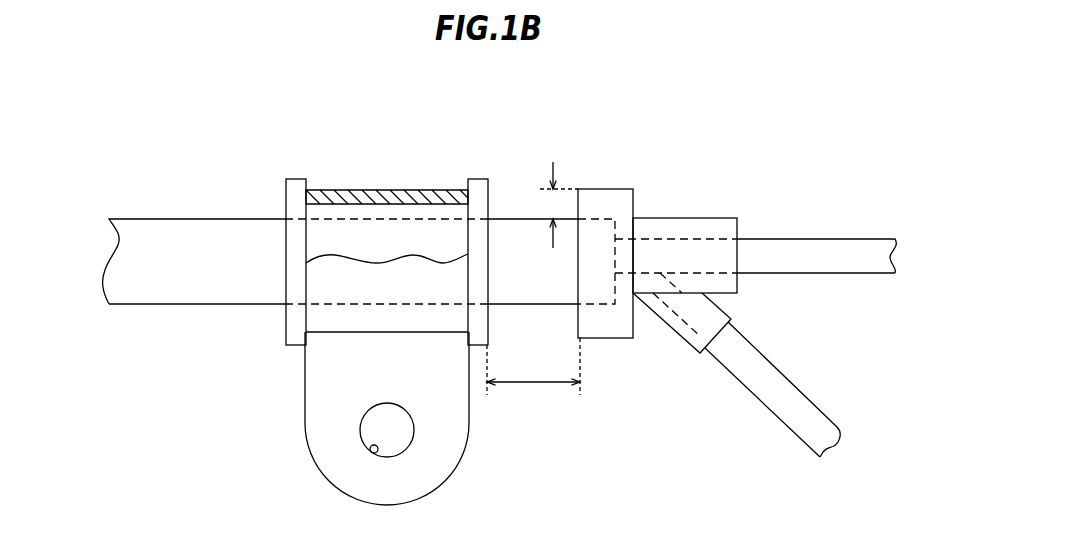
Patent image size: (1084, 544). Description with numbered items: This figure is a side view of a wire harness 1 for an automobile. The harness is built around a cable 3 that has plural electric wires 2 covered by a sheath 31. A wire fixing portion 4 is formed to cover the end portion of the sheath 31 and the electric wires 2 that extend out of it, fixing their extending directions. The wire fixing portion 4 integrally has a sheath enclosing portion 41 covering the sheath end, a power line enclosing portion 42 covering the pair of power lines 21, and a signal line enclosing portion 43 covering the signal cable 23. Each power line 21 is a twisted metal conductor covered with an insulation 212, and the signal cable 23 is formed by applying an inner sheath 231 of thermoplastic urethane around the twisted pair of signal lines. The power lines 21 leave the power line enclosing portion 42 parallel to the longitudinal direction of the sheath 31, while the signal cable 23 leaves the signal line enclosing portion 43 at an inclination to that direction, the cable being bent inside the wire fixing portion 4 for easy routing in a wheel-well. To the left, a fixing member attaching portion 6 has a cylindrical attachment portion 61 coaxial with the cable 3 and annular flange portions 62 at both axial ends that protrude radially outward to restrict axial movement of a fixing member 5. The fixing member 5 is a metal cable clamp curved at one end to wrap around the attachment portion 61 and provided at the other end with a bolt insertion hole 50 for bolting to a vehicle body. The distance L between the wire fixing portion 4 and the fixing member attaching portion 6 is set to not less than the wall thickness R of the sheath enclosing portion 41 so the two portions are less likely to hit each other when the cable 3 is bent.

The wire harness 1 is at (800, 117).
The electric wires 2 is at (828, 225).
The power lines 21 is at (870, 240).
The insulation 212 is at (868, 263).
The signal cable 23 is at (807, 403).
The inner sheath 231 is at (808, 440).
The cable 3 is at (173, 218).
The sheath 31 is at (135, 295).
The wire fixing portion 4 is at (719, 210).
The sheath enclosing portion 41 is at (617, 188).
The power line enclosing portion 42 is at (688, 218).
The signal line enclosing portion 43 is at (677, 337).
The fixing member 5 is at (307, 445).
The bolt insertion hole 50 is at (370, 450).
The fixing member attaching portion 6 is at (435, 163).
The attachment portion 61 is at (373, 240).
The flange portions 62 is at (296, 178).